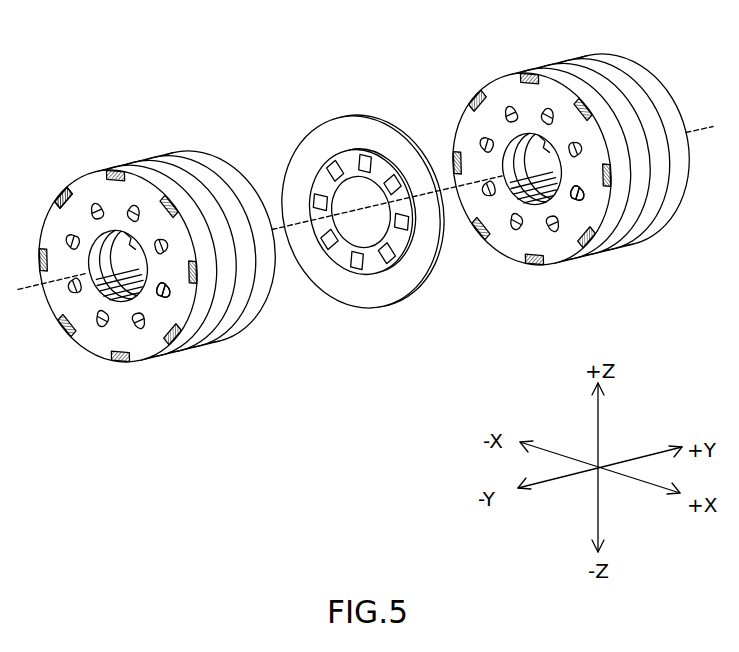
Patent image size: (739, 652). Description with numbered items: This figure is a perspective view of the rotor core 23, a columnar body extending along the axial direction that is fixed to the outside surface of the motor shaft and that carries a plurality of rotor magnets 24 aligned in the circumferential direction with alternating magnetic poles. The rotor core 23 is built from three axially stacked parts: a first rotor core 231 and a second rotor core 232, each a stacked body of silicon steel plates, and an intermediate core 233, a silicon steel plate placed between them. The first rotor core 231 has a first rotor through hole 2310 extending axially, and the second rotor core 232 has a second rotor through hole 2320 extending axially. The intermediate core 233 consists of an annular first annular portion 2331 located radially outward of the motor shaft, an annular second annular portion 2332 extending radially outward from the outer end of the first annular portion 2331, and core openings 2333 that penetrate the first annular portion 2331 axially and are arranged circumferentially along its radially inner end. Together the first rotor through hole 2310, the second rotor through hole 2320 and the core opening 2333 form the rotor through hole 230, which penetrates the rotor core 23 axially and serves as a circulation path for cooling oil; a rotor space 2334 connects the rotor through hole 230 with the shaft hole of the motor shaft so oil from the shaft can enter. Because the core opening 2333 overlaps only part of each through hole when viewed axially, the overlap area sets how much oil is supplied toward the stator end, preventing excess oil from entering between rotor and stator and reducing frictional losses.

The rotor core 23 is at (364, 214).
The rotor magnets 24 is at (57, 193).
The rotor through hole 230 is at (364, 217).
The first rotor core 231 is at (157, 248).
The second rotor core 232 is at (571, 199).
The intermediate core 233 is at (355, 223).
The first rotor through hole 2310 is at (150, 302).
The second rotor through hole 2320 is at (539, 279).
The first annular portion 2331 is at (377, 182).
The second annular portion 2332 is at (338, 288).
The core opening 2333 is at (385, 272).
The rotor space 2334 is at (307, 203).